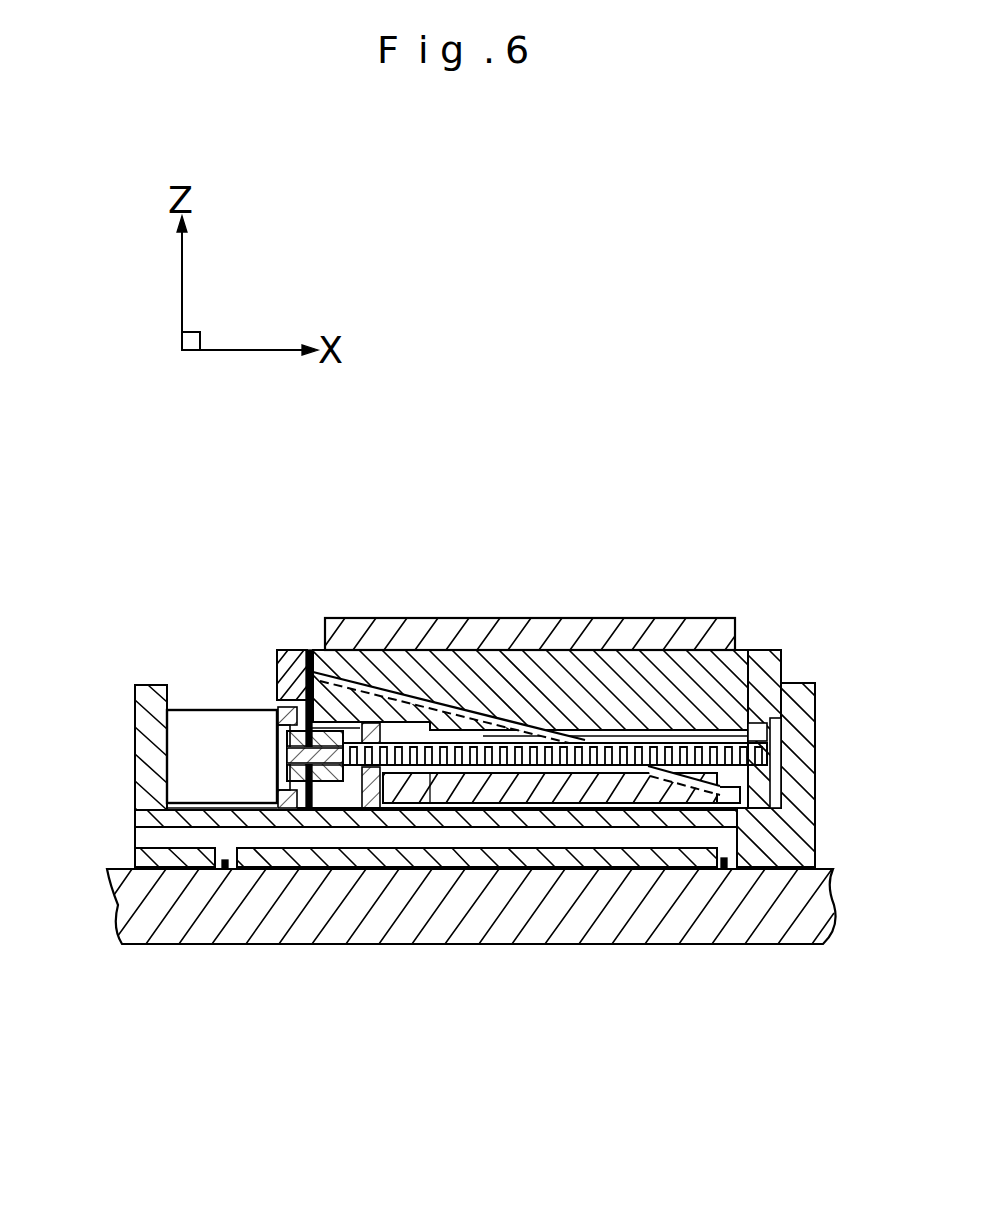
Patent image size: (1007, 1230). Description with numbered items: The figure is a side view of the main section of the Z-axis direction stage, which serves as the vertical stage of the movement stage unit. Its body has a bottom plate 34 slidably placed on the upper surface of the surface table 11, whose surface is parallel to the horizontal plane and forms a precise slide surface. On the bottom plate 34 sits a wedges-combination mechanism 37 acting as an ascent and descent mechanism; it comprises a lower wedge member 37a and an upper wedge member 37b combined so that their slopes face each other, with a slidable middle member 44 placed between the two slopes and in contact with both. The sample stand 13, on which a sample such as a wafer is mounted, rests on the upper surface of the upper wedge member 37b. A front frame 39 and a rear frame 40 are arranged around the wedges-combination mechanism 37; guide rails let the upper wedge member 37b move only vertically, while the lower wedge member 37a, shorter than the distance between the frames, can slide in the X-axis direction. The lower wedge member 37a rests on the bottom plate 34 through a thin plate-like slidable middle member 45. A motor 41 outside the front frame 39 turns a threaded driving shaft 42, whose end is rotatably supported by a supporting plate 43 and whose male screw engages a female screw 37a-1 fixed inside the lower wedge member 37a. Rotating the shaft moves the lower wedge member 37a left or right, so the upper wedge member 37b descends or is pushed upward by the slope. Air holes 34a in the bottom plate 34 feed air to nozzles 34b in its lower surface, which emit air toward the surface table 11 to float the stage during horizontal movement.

The surface table 11 is at (410, 928).
The sample stand 13 is at (555, 635).
The bottom plate 34 is at (807, 835).
The air holes 34a is at (140, 822).
The nozzles 34b is at (227, 865).
The wedges-combination mechanism 37 is at (622, 668).
The lower wedge member 37a is at (567, 790).
The female screw (nut) 37a-1 is at (405, 785).
The upper wedge member 37b is at (413, 668).
The front frame 39 is at (278, 650).
The rear frame 40 is at (763, 655).
The motor 41 is at (192, 722).
The driving shaft 42 is at (326, 624).
The supporting plate 43 is at (782, 682).
The slidable middle member 44 is at (477, 706).
The slidable middle member 45 is at (497, 810).